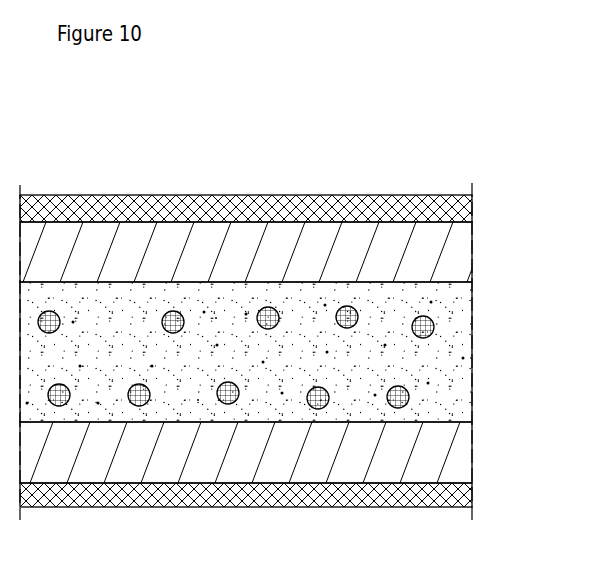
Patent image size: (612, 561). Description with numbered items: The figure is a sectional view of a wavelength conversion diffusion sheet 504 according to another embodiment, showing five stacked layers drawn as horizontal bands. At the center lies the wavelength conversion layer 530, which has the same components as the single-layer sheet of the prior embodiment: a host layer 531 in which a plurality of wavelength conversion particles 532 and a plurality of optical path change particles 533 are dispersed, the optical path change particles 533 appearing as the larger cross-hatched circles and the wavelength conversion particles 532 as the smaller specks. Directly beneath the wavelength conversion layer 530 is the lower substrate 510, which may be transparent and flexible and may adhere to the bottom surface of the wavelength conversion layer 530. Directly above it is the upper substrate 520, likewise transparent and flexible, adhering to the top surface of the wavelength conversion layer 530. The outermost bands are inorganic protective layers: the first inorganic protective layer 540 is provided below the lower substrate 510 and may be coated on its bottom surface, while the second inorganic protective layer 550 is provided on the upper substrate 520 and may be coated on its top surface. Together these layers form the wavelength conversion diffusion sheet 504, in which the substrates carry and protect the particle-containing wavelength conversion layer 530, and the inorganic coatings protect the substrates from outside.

The wavelength conversion diffusion sheet 504 is at (63, 160).
The second inorganic protective layer 550 is at (472, 209).
The upper substrate 520 is at (460, 247).
The wavelength conversion layer 530 is at (282, 352).
The host layer 531 is at (458, 349).
The wavelength conversion particles 532 is at (430, 383).
The optical path change particles 533 is at (513, 392).
The lower substrate 510 is at (458, 452).
The first inorganic protective layer 540 is at (472, 494).